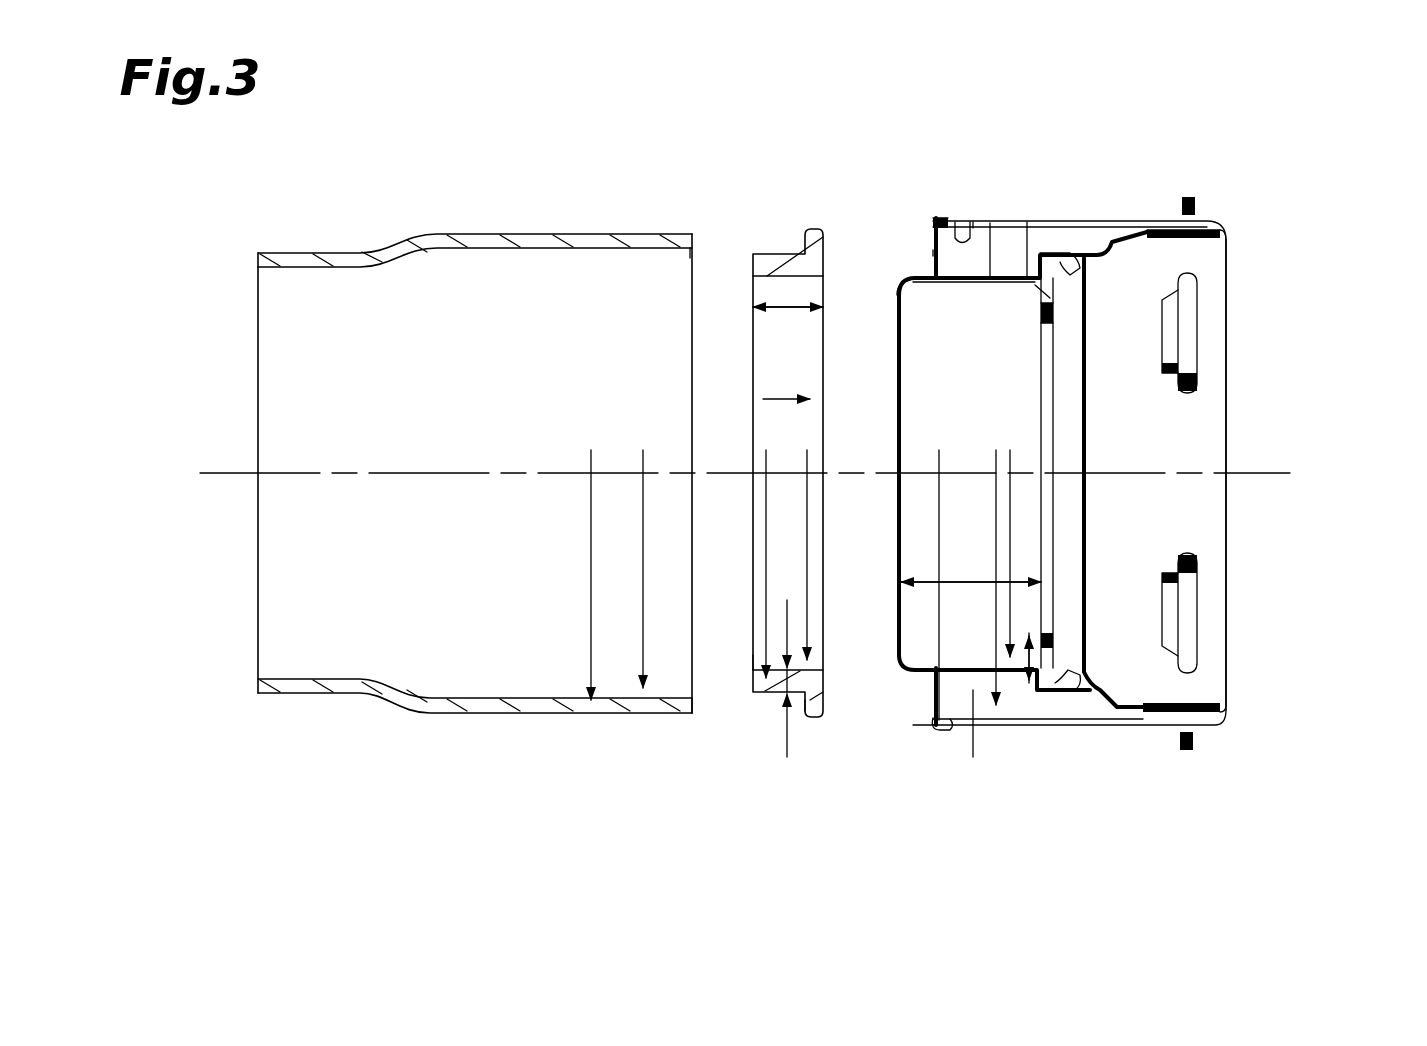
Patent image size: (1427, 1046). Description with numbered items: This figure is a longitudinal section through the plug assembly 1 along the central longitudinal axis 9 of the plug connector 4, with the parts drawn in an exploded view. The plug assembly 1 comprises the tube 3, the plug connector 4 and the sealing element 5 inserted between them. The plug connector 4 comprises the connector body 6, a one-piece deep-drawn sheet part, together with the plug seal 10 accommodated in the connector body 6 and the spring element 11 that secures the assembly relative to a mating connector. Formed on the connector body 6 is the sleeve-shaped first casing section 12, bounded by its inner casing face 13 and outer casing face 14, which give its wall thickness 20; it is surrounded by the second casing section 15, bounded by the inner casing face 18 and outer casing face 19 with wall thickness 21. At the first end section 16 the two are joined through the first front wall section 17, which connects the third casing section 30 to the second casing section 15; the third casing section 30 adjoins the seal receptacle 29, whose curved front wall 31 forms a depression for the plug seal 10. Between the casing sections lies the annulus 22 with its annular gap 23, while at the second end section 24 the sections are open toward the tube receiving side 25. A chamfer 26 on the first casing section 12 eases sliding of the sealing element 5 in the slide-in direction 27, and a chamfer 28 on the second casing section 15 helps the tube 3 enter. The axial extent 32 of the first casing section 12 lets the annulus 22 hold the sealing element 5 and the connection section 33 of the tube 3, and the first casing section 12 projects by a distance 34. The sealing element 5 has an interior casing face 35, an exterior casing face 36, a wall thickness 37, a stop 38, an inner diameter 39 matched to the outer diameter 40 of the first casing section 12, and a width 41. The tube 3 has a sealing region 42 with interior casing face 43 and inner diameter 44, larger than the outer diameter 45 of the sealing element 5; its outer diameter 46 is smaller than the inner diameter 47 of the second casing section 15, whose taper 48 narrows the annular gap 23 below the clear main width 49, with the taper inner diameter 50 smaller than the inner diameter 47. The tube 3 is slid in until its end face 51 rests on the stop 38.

The plug assembly 1 is at (1290, 92).
The tube 3 is at (478, 745).
The plug connector 4 is at (1090, 762).
The sealing element 5 is at (775, 753).
The connector body 6 is at (1135, 720).
The central longitudinal axis 9 is at (1272, 483).
The plug seal 10 is at (1060, 280).
The spring element 11 is at (1197, 635).
The first casing section 12 is at (1010, 282).
The inner casing face 13 is at (1045, 253).
The outer casing face 14 is at (1027, 222).
The second casing section 15 is at (990, 225).
The first end section 16 is at (1297, 185).
The first front wall section 17 is at (1258, 232).
The inner casing face 18 is at (973, 222).
The outer casing face 19 is at (980, 223).
The wall thickness 20 is at (1037, 697).
The wall thickness 21 is at (940, 702).
The annulus 22 is at (953, 262).
The annular gap 23 is at (933, 252).
The second end section 24 is at (885, 188).
The tube receiving side 25 is at (905, 188).
The chamfer 26 is at (897, 283).
The slide-in direction 27 is at (776, 398).
The chamfer 28 is at (935, 225).
The seal receptacle 29 is at (1112, 247).
The third casing section 30 is at (1200, 240).
The front wall 31 is at (1035, 285).
The axial extent 32 is at (962, 580).
The connection section 33 is at (590, 743).
The distance 34 is at (913, 735).
The interior casing face 35 is at (753, 662).
The exterior casing face 36 is at (773, 700).
The wall thickness 37 is at (790, 740).
The stop 38 is at (822, 708).
The inner diameter 39 is at (810, 500).
The outer diameter 40 is at (1000, 700).
The width 41 is at (792, 312).
The sealing region 42 is at (651, 298).
The interior casing face 43 is at (633, 263).
The inner diameter 44 is at (643, 637).
The outer diameter 45 is at (766, 535).
The outer diameter 46 is at (591, 625).
The inner diameter 47 is at (1000, 685).
The taper 48 is at (905, 228).
The clear main width 49 is at (990, 250).
The inner diameter 50 is at (973, 712).
The end face 51 is at (693, 707).